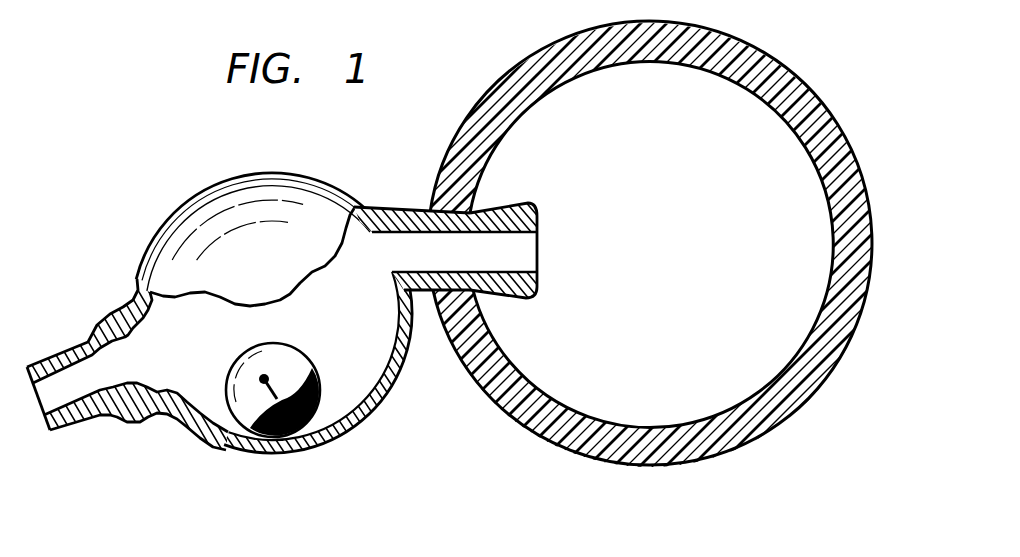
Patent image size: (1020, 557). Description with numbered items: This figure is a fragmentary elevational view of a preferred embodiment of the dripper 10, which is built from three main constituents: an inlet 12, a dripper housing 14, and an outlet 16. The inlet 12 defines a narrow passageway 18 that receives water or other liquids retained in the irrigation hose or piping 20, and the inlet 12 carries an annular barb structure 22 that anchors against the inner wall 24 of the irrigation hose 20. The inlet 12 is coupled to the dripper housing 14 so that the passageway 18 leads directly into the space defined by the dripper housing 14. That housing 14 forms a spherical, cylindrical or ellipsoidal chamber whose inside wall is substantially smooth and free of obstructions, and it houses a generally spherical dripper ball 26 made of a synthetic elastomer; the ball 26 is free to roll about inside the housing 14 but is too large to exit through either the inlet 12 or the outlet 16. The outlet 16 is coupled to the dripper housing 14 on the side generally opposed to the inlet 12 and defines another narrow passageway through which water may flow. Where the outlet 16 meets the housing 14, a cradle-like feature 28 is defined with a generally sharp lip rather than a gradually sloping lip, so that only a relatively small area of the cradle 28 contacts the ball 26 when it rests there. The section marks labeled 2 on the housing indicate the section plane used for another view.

The dripper 10 is at (112, 100).
The inlet 12 is at (455, 214).
The dripper housing 14 is at (324, 170).
The outlet 16 is at (167, 385).
The passageway 18 is at (487, 264).
The irrigation hose 20 is at (483, 98).
The annular barb structure 22 is at (540, 227).
The inner wall 24 is at (557, 85).
The dripper ball 26 is at (297, 348).
The cradle 28 is at (162, 371).
The section line 2- 2 is at (140, 257).